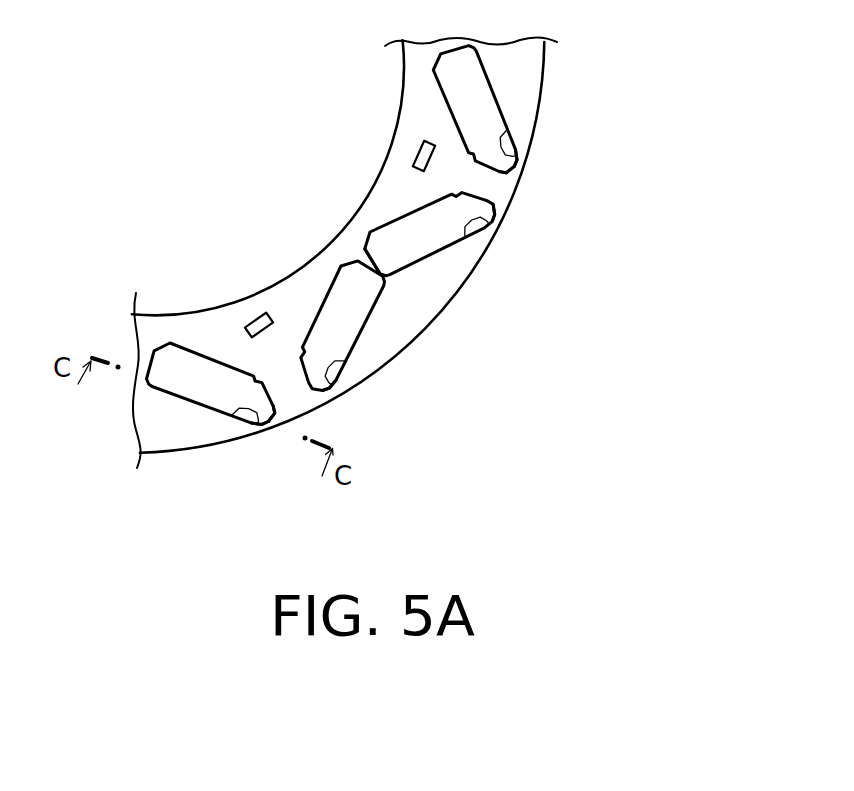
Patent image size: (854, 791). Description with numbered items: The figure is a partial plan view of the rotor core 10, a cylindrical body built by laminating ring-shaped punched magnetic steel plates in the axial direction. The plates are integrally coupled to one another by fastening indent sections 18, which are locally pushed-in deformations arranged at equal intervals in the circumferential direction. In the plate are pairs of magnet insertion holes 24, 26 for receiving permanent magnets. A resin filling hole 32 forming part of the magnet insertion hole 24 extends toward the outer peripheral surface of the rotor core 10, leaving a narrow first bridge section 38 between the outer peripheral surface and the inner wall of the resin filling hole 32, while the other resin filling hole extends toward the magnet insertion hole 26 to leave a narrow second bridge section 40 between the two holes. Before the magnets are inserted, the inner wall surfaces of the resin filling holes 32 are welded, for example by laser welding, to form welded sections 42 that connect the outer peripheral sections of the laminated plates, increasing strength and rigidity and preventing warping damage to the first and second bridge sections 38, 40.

The rotor core 10 is at (566, 79).
The fastening indent section 18 is at (416, 146).
The magnet insertion hole 24 is at (196, 397).
The magnet insertion hole 26 is at (489, 120).
The resin filling hole 32 is at (512, 170).
The first bridge section 38 is at (519, 159).
The second bridge section 40 is at (377, 270).
The welded section 42 is at (505, 134).